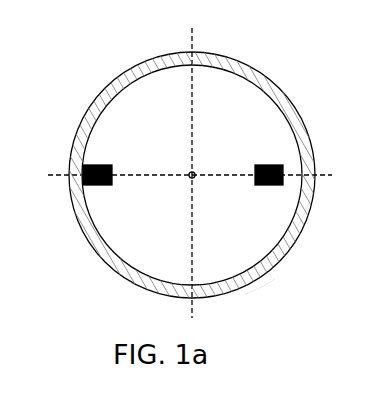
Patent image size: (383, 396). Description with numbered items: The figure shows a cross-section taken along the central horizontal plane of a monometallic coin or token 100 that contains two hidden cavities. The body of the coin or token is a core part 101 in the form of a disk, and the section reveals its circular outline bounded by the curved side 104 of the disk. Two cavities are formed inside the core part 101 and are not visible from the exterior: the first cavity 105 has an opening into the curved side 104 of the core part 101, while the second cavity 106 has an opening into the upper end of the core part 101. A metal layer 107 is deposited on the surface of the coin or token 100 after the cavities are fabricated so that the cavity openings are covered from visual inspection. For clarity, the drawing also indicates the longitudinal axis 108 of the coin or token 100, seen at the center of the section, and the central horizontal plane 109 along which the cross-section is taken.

The monometallic coin or token 100 is at (168, 53).
The core part 101 is at (225, 89).
The curved side 104 is at (272, 262).
The first cavity 105 is at (88, 187).
The second cavity 106 is at (283, 162).
The metal layer 107 is at (303, 208).
The longitudinal axis 108 is at (194, 174).
The central horizontal plane 109 is at (169, 161).